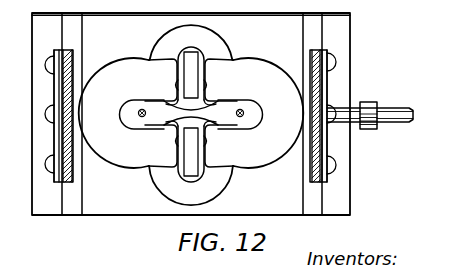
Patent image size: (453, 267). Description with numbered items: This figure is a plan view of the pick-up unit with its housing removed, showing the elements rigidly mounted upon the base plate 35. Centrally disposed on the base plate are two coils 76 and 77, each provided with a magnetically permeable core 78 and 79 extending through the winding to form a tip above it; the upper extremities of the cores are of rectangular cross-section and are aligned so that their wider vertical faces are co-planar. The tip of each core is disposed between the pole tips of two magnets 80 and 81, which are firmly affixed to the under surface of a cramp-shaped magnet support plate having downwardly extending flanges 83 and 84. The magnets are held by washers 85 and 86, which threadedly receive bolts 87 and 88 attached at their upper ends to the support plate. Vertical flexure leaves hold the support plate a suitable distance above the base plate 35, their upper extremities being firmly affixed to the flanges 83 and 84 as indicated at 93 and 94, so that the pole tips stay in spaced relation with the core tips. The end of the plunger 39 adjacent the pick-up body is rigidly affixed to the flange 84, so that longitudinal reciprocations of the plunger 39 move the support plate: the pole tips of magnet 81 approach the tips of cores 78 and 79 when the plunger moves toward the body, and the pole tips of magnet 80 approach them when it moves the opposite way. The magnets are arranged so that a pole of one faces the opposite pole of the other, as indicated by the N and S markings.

The base plate 35 is at (191, 114).
The plunger 39 is at (385, 106).
The coil 76 is at (218, 184).
The coil 77 is at (211, 38).
The core 78 is at (192, 176).
The core 79 is at (190, 53).
The magnet 80 is at (128, 113).
The magnet 81 is at (253, 113).
The flange 83 is at (73, 179).
The flange 84 is at (313, 167).
The washer 85 is at (142, 102).
The washer 86 is at (262, 113).
The bolt 87 is at (124, 109).
The bolt 88 is at (241, 117).
The attachment of flexure leaf to flange 93 is at (58, 144).
The attachment of flexure leaf to flange 94 is at (328, 156).